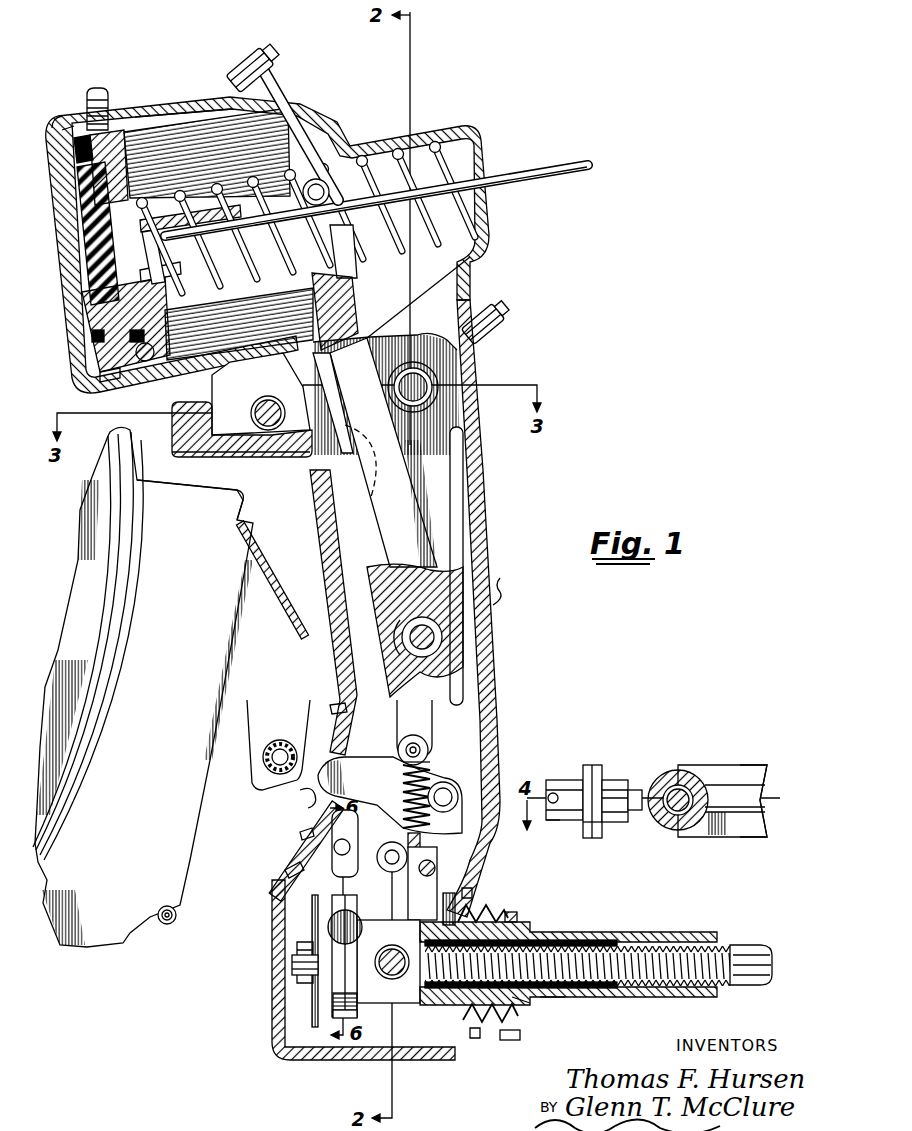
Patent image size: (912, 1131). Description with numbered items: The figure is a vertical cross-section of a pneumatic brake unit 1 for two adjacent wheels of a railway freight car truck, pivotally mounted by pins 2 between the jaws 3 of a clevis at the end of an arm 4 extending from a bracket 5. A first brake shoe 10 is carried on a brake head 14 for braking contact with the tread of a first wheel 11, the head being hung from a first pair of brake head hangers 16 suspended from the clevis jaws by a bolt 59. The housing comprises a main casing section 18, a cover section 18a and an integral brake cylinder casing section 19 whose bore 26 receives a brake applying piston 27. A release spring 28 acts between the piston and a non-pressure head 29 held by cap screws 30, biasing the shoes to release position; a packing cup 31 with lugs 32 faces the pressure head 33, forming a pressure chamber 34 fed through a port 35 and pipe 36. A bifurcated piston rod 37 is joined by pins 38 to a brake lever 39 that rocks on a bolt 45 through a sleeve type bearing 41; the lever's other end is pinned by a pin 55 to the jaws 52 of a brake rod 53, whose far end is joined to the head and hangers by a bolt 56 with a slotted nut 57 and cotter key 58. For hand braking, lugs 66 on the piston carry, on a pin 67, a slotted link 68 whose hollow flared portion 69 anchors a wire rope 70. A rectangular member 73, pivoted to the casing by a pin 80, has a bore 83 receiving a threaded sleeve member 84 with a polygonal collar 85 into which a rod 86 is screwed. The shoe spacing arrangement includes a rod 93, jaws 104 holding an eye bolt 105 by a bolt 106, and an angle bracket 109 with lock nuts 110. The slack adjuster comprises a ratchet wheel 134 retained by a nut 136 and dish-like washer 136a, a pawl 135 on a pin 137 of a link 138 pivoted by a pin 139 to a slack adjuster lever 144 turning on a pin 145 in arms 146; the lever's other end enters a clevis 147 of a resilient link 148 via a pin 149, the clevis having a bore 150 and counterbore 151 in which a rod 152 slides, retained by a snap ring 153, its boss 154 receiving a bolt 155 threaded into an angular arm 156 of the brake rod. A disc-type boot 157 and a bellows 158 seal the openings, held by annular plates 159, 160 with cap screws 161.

The pneumatic brake unit 1 is at (501, 583).
The pins 2 is at (430, 394).
The jaws 3 is at (220, 432).
The arm 4 is at (198, 447).
The bracket 5 is at (467, 965).
The first brake shoe 10 is at (95, 945).
The first wheel 11 is at (112, 446).
The brake head 14 is at (147, 927).
The brake head hangers 16 is at (253, 465).
The main casing section 18 is at (472, 461).
The cover section 18a is at (285, 1050).
The brake cylinder casing section 19 is at (135, 116).
The bore 26 is at (176, 125).
The brake applying piston 27 is at (68, 113).
The release spring 28 is at (290, 170).
The non-pressure head 29 is at (462, 130).
The cap screws 30 is at (273, 63).
The packing cup 31 is at (140, 320).
The lugs 32 is at (75, 236).
The pressure head 33 is at (90, 370).
The pressure chamber 34 is at (110, 367).
The port 35 is at (72, 120).
The pipe 36 is at (100, 90).
The piston rod 37 is at (242, 203).
The pins 38 is at (316, 192).
The brake lever 39 is at (427, 532).
The sleeve type bearing 41 is at (437, 652).
The bolt 45 is at (430, 637).
The jaws 52 is at (548, 790).
The brake rod 53 is at (312, 782).
The pin 55 is at (440, 787).
The bolt 56 is at (283, 743).
The slotted nut 57 is at (283, 728).
The cotter key 58 is at (307, 797).
The bolt 59 is at (252, 418).
The lugs 66 is at (117, 232).
The pin 67 is at (95, 300).
The slotted link 68 is at (150, 273).
The hollow flared portion 69 is at (203, 215).
The wire rope 70 is at (526, 175).
The rectangular member 73 is at (523, 922).
The pin 80 is at (403, 975).
The bore 83 is at (520, 1000).
The sleeve member 84 is at (583, 935).
The polygonal collar 85 is at (553, 1000).
The rod 86 is at (745, 947).
The rod 93 is at (737, 803).
The jaws 104 is at (712, 790).
The eye bolt 105 is at (648, 780).
The bolt 106 is at (672, 807).
The angle bracket 109 is at (600, 822).
The lock nuts 110 is at (612, 780).
The ratchet wheel 134 is at (340, 1010).
The pawl 135 is at (297, 975).
The nut 136 is at (300, 948).
The dish-like washer 136a is at (333, 1005).
The pin 137 is at (317, 898).
The link 138 is at (333, 933).
The pin 139 is at (287, 875).
The slack adjuster lever 144 is at (437, 887).
The pin 145 is at (440, 850).
The arms 146 is at (330, 920).
The clevis 147 is at (407, 851).
The resilient link 148 is at (433, 732).
The pin 149 is at (435, 870).
The bore 150 is at (585, 822).
The counterbore 151 is at (536, 845).
The rod 152 is at (445, 797).
The snap ring 153 is at (438, 835).
The boss 154 is at (432, 745).
The bolt 155 is at (418, 752).
The angular arm 156 is at (406, 772).
The disc-type boot 157 is at (307, 833).
The bellows 158 is at (508, 1017).
The annular plate 159 is at (520, 1040).
The annular plate 160 is at (290, 857).
The cap screws 161 is at (335, 707).